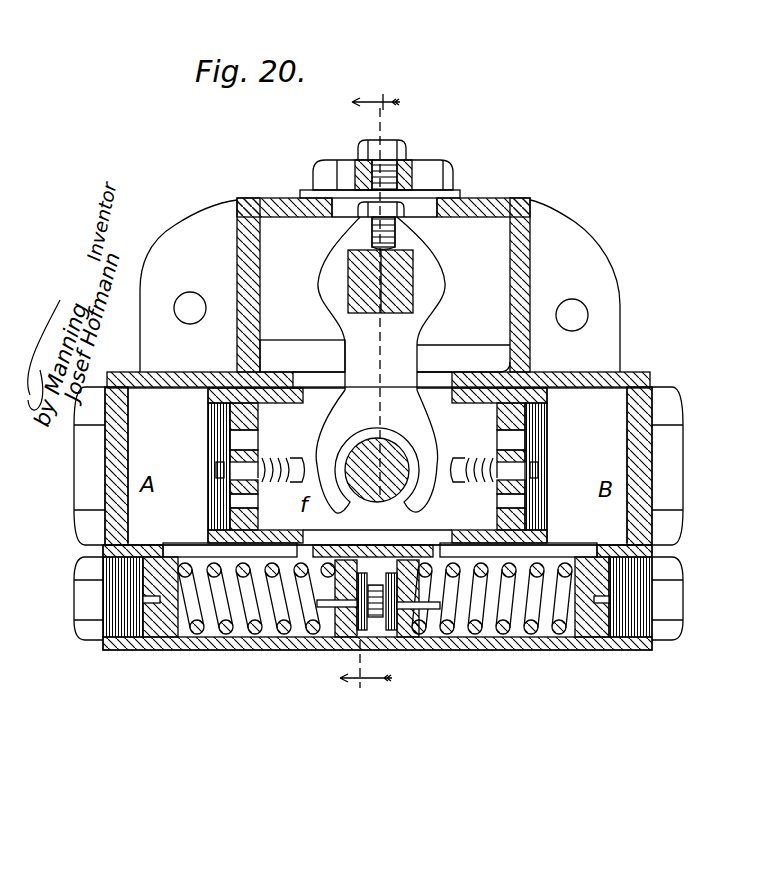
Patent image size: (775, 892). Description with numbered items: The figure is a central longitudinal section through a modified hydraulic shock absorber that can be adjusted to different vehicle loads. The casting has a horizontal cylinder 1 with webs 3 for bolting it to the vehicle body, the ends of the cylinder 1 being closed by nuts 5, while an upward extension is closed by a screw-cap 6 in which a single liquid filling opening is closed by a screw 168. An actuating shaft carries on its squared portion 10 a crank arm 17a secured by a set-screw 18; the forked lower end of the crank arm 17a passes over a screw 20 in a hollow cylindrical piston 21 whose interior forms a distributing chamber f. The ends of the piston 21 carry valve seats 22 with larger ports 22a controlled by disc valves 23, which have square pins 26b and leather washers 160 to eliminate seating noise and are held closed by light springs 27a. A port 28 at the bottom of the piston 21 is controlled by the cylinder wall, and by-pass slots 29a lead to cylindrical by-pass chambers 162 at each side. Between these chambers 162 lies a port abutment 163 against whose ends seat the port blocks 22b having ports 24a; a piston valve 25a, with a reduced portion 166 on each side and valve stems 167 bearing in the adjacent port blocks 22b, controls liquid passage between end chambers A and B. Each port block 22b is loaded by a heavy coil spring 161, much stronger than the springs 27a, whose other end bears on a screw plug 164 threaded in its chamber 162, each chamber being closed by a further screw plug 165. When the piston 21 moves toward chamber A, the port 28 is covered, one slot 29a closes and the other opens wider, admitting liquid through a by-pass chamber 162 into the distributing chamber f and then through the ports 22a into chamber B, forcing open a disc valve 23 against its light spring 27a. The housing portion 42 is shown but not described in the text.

The horizontal cylinder 1 is at (172, 382).
The webs 3 is at (178, 233).
The nuts 5 is at (76, 475).
The screw-cap 6 is at (320, 186).
The squared portion 10 is at (410, 282).
The crank arm 17a is at (405, 360).
The set-screw 18 is at (372, 240).
The screw 20 is at (383, 452).
The cylindrical piston 21 is at (578, 412).
The valve seats 22 is at (256, 418).
The larger port 22a is at (253, 440).
The port blocks 22b is at (345, 615).
The disc valves 23 is at (209, 438).
The ports 24a is at (322, 610).
The piston valve 25a is at (374, 645).
The square pin 26b is at (548, 461).
The light springs 27a is at (483, 483).
The port 28 is at (428, 540).
The by-pass slots 29a is at (187, 552).
The housing 42 is at (497, 363).
The leather washers 160 is at (210, 453).
The adjustable springs 161 is at (226, 643).
The by-pass chambers 162 is at (188, 643).
The port abutment 163 is at (380, 630).
The screw plug 164 is at (158, 642).
The screw plug 165 is at (76, 601).
The reduced portion 166 is at (367, 540).
The valve stem 167 is at (292, 650).
The screw 168 is at (401, 145).